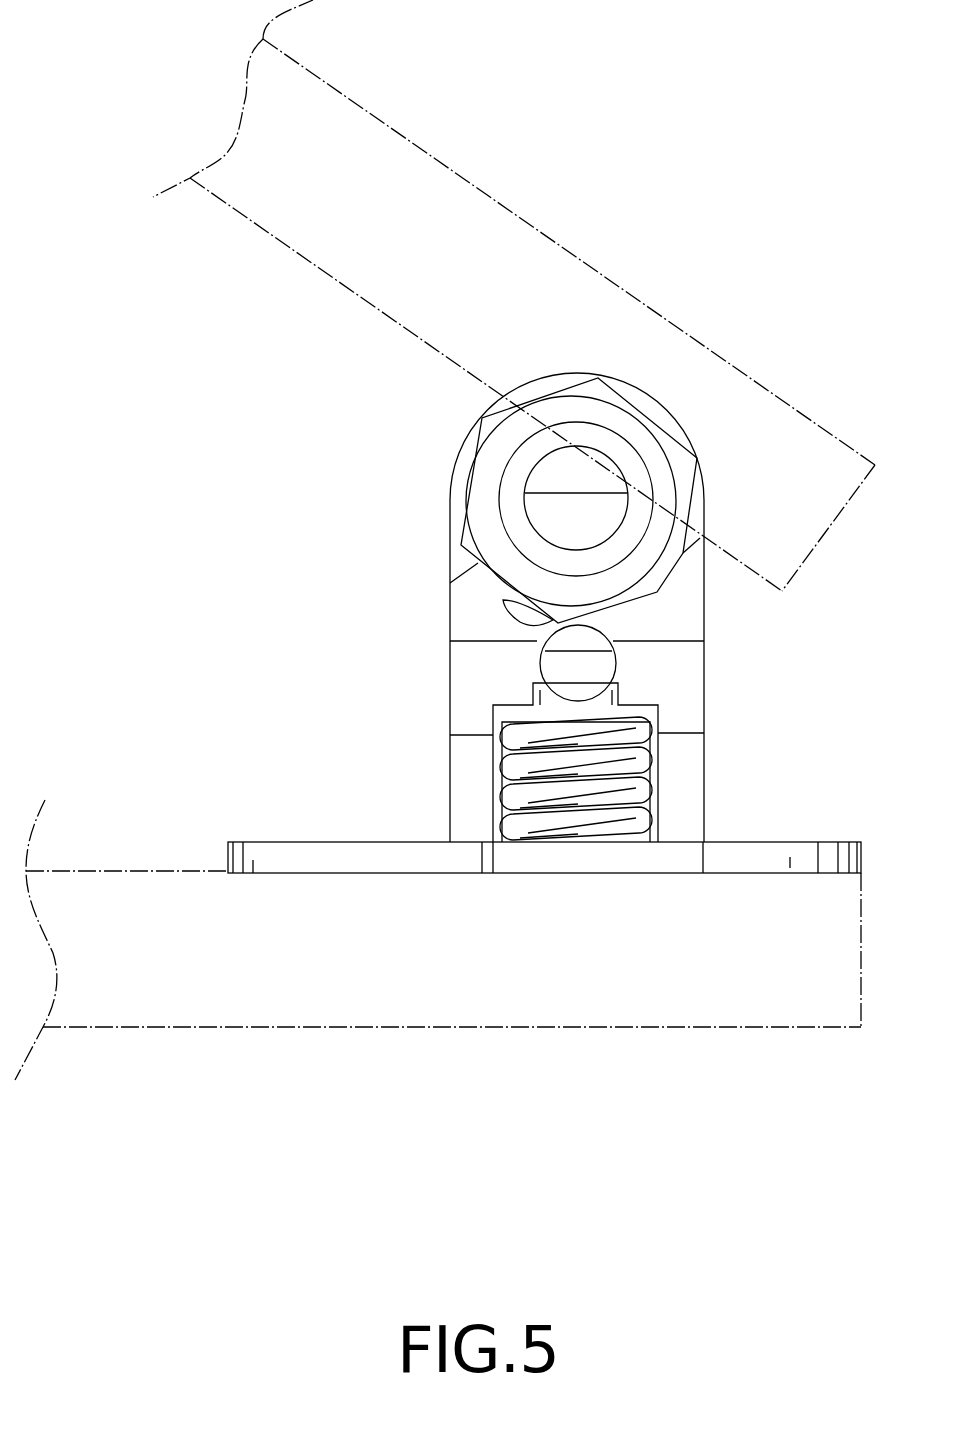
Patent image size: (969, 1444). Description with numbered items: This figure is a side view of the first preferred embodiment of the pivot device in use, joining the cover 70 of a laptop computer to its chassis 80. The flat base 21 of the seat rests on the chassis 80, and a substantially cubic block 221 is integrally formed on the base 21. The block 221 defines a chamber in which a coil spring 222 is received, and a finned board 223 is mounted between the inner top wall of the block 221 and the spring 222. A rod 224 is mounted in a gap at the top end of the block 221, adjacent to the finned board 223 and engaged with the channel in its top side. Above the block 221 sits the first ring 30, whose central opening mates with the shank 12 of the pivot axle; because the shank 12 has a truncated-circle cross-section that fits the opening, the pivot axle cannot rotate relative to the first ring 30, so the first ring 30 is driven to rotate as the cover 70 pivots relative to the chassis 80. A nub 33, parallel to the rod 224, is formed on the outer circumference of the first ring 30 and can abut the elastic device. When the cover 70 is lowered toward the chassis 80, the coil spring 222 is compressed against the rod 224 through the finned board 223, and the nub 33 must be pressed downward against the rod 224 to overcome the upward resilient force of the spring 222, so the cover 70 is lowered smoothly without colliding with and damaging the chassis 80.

The cover 70 is at (433, 165).
The shank 12 is at (550, 478).
The first ring 30 is at (455, 481).
The nub 33 is at (545, 618).
The rod 224 is at (603, 672).
The finned board 223 is at (643, 716).
The block 221 is at (464, 760).
The coil spring 222 is at (643, 793).
The base 21 is at (263, 848).
The chassis 80 is at (302, 1020).